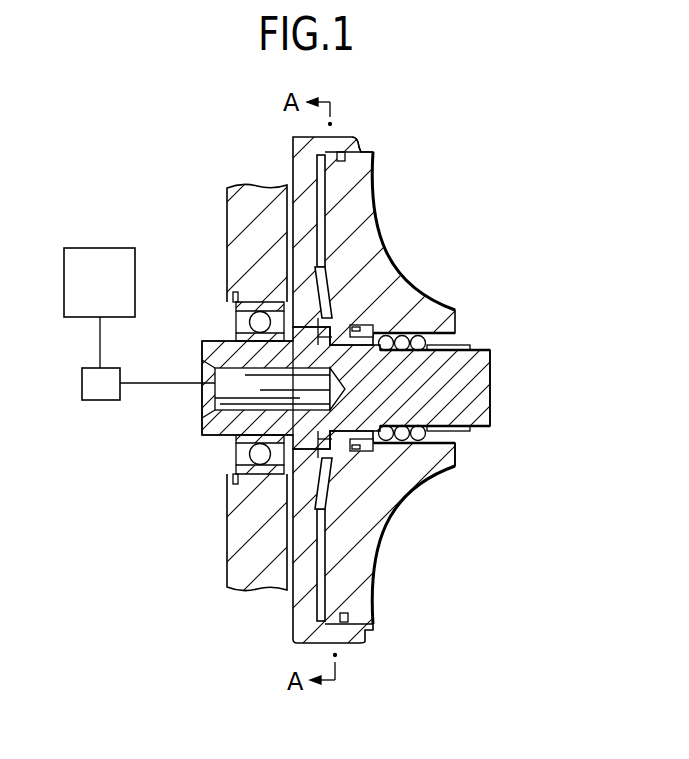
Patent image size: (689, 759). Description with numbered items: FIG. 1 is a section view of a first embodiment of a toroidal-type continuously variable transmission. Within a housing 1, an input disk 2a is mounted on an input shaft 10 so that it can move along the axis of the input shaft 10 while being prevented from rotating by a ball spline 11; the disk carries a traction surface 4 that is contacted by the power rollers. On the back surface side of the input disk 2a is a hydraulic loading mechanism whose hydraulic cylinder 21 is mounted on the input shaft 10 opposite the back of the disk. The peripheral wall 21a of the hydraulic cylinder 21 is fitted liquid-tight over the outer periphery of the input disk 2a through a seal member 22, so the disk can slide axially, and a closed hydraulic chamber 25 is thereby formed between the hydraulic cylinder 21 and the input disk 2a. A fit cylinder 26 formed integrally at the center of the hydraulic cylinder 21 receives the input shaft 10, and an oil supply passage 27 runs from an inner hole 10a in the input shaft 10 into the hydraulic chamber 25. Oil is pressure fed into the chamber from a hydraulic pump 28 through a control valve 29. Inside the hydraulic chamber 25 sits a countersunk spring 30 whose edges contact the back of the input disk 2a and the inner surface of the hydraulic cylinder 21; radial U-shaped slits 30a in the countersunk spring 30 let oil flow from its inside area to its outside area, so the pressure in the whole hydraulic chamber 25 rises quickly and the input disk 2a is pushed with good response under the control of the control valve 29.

The housing 1 is at (227, 205).
The first input disk 2a is at (365, 182).
The traction surface 4 is at (420, 290).
The input shaft 10 is at (480, 423).
The inner hole 10a is at (252, 398).
The ball spline 11 is at (477, 333).
The hydraulic cylinder 21 is at (298, 240).
The peripheral wall 21a is at (355, 149).
The seal member 22 is at (337, 152).
The hydraulic chamber 25 is at (323, 237).
The fit cylinder 26 is at (455, 467).
The oil supply passage 27 is at (427, 333).
The hydraulic pump 28 is at (100, 248).
The control valve 29 is at (100, 400).
The countersunk spring 30 is at (330, 265).
The slits 30a is at (312, 283).